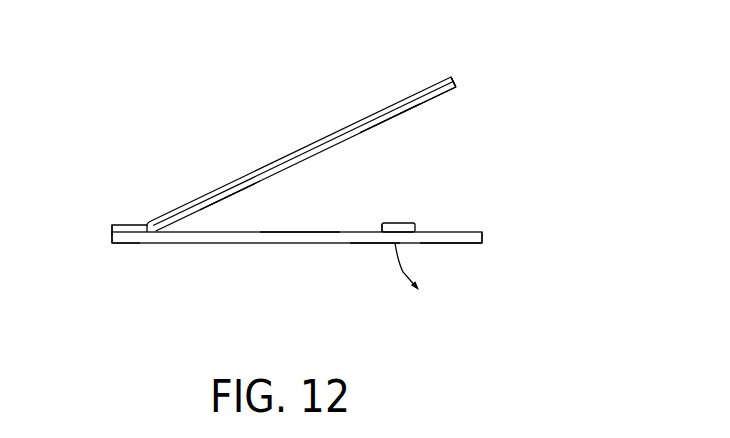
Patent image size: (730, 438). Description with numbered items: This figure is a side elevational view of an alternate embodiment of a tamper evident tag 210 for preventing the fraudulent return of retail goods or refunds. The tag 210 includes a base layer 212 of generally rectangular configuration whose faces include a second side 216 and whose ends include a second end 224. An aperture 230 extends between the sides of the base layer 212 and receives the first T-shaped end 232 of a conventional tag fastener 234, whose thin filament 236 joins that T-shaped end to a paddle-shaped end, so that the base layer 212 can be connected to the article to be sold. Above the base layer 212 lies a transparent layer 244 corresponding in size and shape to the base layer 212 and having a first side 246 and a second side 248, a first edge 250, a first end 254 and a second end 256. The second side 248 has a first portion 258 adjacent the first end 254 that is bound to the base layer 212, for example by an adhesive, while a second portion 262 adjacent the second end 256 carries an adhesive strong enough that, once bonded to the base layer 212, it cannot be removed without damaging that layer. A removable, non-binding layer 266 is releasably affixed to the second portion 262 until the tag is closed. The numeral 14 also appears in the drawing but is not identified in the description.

The electronic device 14 is at (294, 231).
The tamper evident tag 210 is at (219, 157).
The base layer 212 is at (332, 245).
The second side of base layer 216 is at (455, 245).
The second end of base layer 224 is at (483, 237).
The aperture 230 is at (372, 245).
The first T-shaped end of tag fastener 232 is at (408, 223).
The tag fastener 234 is at (379, 216).
The thin filament 236 is at (405, 266).
The transparent layer 244 is at (445, 64).
The first side of transparent layer 246 is at (332, 136).
The second side of transparent layer 248 is at (427, 102).
The first edge of transparent layer 250 is at (147, 226).
The first end of transparent layer 254 is at (110, 228).
The second end of transparent layer 256 is at (455, 73).
The first portion of second side of transparent layer 258 is at (125, 236).
The second portion of second side of transparent layer 262 is at (390, 118).
The removable non-binding layer 266 is at (226, 198).